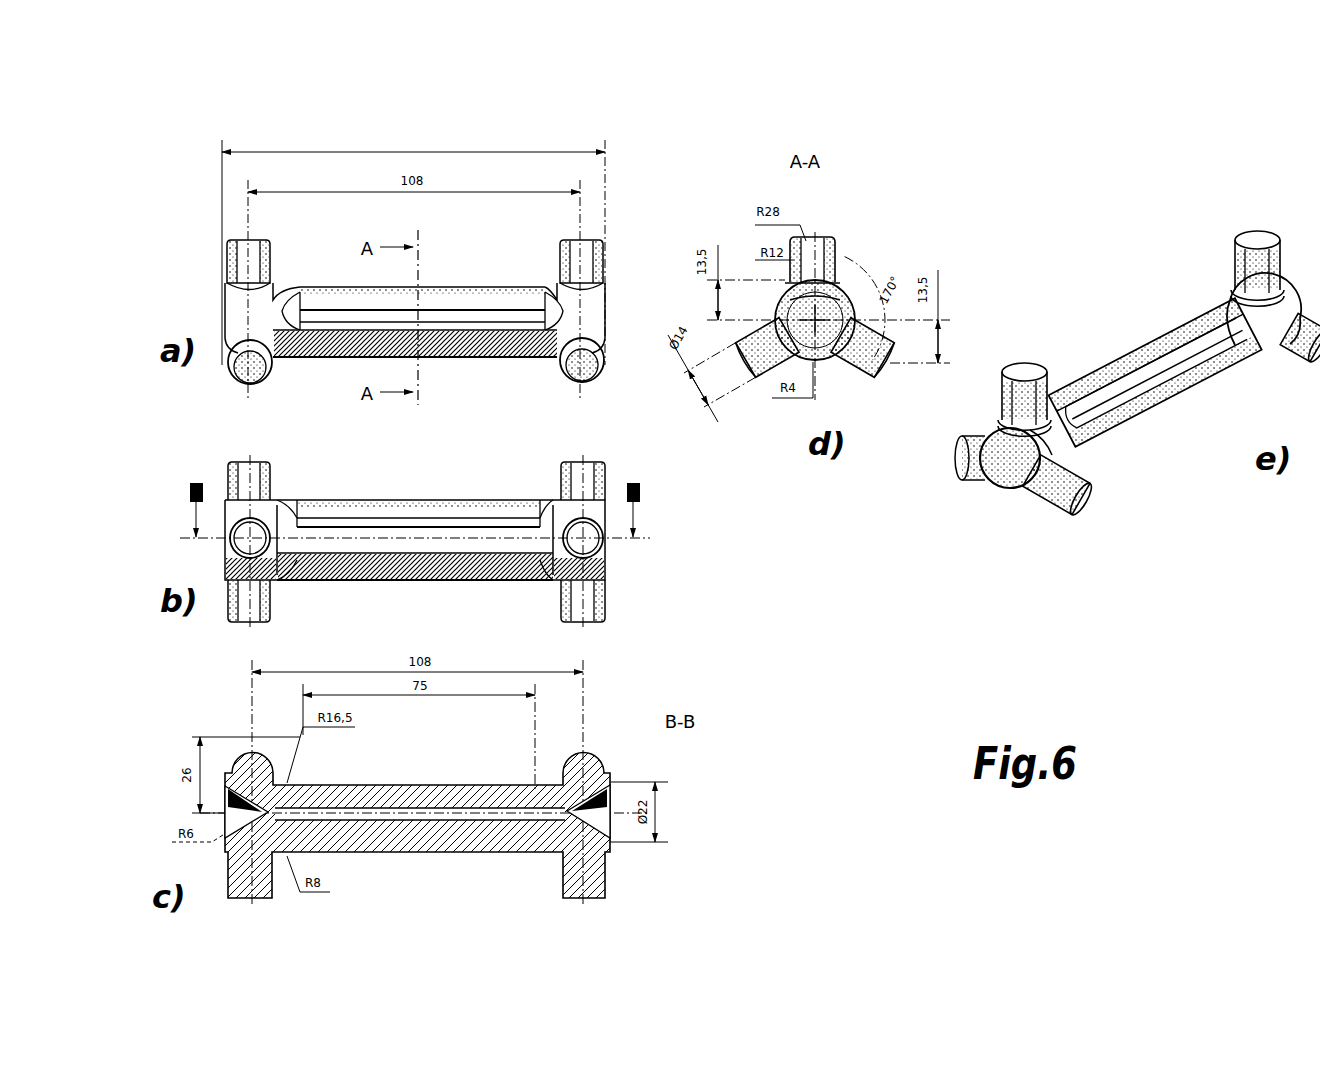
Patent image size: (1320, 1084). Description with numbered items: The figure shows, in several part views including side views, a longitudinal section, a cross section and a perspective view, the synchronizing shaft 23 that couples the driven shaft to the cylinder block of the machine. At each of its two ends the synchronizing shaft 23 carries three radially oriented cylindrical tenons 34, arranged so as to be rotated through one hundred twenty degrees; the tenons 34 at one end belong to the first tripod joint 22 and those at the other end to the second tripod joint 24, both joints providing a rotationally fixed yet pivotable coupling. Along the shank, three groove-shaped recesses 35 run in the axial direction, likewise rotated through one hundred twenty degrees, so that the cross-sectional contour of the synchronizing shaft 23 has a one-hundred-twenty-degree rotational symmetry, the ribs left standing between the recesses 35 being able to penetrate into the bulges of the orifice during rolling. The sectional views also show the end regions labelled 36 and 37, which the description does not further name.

The first tripod joint 22 is at (240, 220).
The synchronizing shaft 23 is at (450, 357).
The second tripod joint 24 is at (584, 224).
The cylindrical tenon 34 is at (237, 258).
The groove-shaped recess 35 is at (465, 302).
The conical socket 36 is at (228, 808).
The conical socket 37 is at (597, 810).